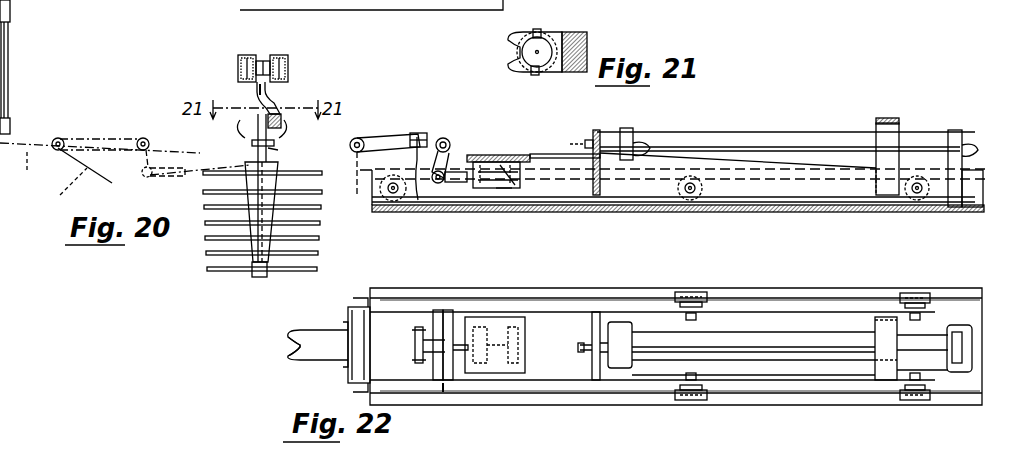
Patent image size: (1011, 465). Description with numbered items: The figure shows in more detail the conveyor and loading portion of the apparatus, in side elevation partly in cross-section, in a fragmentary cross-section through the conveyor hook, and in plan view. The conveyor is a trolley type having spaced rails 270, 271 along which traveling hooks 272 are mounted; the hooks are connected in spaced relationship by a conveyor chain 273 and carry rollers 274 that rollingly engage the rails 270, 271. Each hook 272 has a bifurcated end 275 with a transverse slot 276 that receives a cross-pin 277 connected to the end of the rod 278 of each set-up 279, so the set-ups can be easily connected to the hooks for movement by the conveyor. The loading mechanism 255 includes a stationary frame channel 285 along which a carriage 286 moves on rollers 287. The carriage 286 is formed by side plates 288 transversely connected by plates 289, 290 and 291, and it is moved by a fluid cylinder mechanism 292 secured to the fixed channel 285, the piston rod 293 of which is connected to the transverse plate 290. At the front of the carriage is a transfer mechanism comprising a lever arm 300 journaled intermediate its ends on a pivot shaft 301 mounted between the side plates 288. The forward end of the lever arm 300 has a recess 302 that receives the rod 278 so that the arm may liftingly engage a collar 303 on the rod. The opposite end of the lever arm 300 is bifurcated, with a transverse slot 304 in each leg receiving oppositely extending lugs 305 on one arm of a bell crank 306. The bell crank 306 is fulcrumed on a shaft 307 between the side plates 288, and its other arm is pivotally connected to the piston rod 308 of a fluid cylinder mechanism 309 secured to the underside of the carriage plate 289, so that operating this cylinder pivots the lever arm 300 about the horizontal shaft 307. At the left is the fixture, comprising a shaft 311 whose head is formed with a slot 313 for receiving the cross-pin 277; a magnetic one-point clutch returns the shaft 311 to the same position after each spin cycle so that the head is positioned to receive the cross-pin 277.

In FIG. 20, the loading mechanism 255 is at (748, 127).
In FIG. 22, the loading mechanism 255 is at (808, 289).
In FIG. 20, the rail 270 is at (247, 55).
In FIG. 20, the rail 271 is at (279, 55).
In FIG. 20, the traveling hook 272 is at (282, 97).
In FIG. 21, the traveling hook 272 is at (587, 43).
In FIG. 20, the conveyor chain 273 is at (260, 88).
In FIG. 20, the roller 274 is at (238, 66).
In FIG. 21, the bifurcated end 275 is at (510, 56).
In FIG. 21, the transverse slot 276 is at (540, 30).
In FIG. 20, the cross-pin 277 is at (258, 112).
In FIG. 21, the cross-pin 277 is at (537, 55).
In FIG. 20, the rod 278 is at (252, 143).
In FIG. 21, the rod 278 is at (530, 60).
In FIG. 20, the set-up 279 is at (244, 292).
In FIG. 20, the frame channel 285 is at (815, 212).
In FIG. 22, the frame channel 285 is at (580, 292).
In FIG. 20, the carriage 286 is at (590, 220).
In FIG. 22, the carriage 286 is at (623, 303).
In FIG. 20, the roller 287 is at (382, 218).
In FIG. 22, the roller 287 is at (707, 305).
In FIG. 20, the side plate 288 is at (563, 154).
In FIG. 22, the side plate 288 is at (855, 308).
In FIG. 20, the plate 289 is at (497, 155).
In FIG. 22, the plate 289 is at (480, 317).
In FIG. 20, the transverse plate 290 is at (596, 130).
In FIG. 22, the transverse plate 290 is at (603, 373).
In FIG. 20, the plate 291 is at (888, 118).
In FIG. 22, the plate 291 is at (885, 370).
In FIG. 20, the fluid cylinder mechanism 292 is at (810, 143).
In FIG. 22, the fluid cylinder mechanism 292 is at (767, 340).
In FIG. 20, the piston rod 293 is at (651, 135).
In FIG. 22, the piston rod 293 is at (582, 348).
In FIG. 20, the lever arm 300 is at (376, 120).
In FIG. 22, the lever arm 300 is at (317, 361).
In FIG. 20, the pivot pin 301 is at (62, 140).
In FIG. 22, the pivot pin 301 is at (357, 303).
In FIG. 22, the recess 302 is at (285, 340).
In FIG. 20, the collar 303 is at (268, 150).
In FIG. 20, the transverse slot 304 is at (418, 133).
In FIG. 22, the transverse slot 304 is at (415, 347).
In FIG. 20, the lug 305 is at (430, 138).
In FIG. 20, the bell crank 306 is at (140, 168).
In FIG. 22, the bell crank 306 is at (443, 307).
In FIG. 20, the shaft 307 is at (440, 190).
In FIG. 22, the shaft 307 is at (443, 383).
In FIG. 20, the piston rod 308 is at (466, 190).
In FIG. 22, the piston rod 308 is at (460, 352).
In FIG. 20, the fluid cylinder mechanism 309 is at (510, 190).
In FIG. 22, the fluid cylinder mechanism 309 is at (497, 332).
In FIG. 20, the shaft 311 is at (2, 78).
In FIG. 20, the slot 313 is at (0, 114).